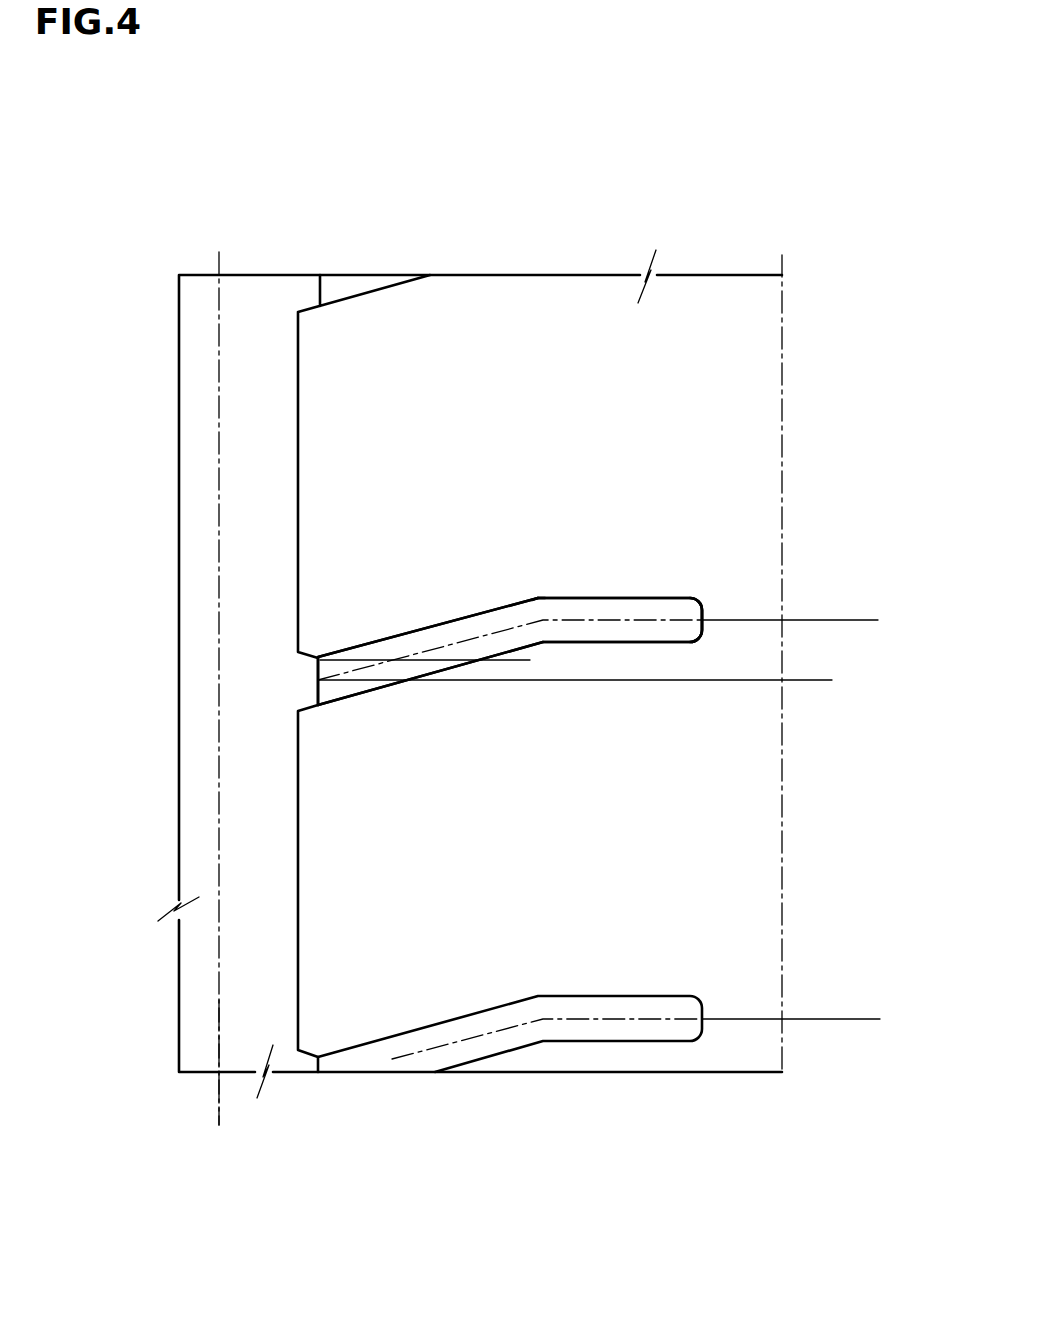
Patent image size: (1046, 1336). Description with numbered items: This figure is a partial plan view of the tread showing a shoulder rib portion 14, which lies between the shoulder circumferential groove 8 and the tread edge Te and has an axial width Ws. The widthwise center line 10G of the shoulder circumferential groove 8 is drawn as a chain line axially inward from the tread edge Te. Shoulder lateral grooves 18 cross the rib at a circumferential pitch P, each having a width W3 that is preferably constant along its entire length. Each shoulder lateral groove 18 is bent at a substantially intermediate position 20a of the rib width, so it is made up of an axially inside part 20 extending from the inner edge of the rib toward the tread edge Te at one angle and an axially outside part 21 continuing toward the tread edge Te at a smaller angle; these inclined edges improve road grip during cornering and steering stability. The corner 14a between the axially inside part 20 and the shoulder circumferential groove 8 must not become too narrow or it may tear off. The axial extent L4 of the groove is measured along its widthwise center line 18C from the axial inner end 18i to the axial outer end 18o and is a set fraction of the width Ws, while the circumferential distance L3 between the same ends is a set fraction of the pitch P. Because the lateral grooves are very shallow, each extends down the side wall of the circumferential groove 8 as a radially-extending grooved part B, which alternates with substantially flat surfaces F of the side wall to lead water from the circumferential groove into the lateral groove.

The circumferential groove 8 is at (254, 300).
The widthwise center line of the shoulder circumferential groove 10G is at (215, 1093).
The shoulder rib portion 14 is at (712, 272).
The corner 14a is at (333, 568).
The shoulder lateral groove 18 is at (638, 180).
The axial inner end 18i is at (318, 680).
The axial outer end 18o is at (702, 620).
The widthwise center line 18C is at (638, 1019).
The axially inside part 20 is at (477, 623).
The intermediate position 20a is at (540, 607).
The axially outside part 21 is at (638, 603).
The tread edge Te is at (783, 648).
The substantially flat surface F is at (297, 503).
The radially-extending grooved part B is at (290, 670).
The circumferential distance L3 is at (828, 585).
The circumferential pitch P is at (873, 620).
The width of the shoulder lateral groove W3 is at (583, 1072).
The axial extent of the shoulder lateral groove L4 is at (702, 1212).
The axial width of the shoulder rib portion Ws is at (297, 1248).